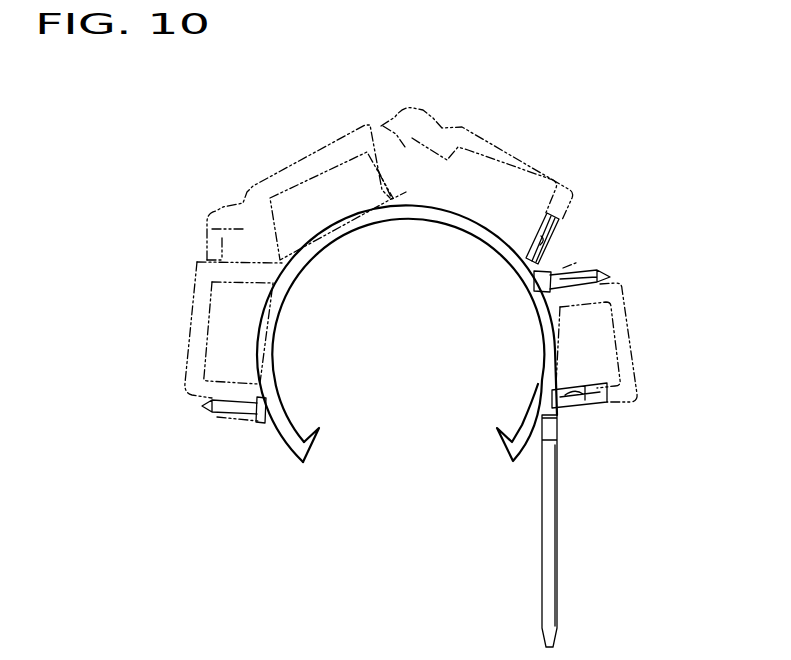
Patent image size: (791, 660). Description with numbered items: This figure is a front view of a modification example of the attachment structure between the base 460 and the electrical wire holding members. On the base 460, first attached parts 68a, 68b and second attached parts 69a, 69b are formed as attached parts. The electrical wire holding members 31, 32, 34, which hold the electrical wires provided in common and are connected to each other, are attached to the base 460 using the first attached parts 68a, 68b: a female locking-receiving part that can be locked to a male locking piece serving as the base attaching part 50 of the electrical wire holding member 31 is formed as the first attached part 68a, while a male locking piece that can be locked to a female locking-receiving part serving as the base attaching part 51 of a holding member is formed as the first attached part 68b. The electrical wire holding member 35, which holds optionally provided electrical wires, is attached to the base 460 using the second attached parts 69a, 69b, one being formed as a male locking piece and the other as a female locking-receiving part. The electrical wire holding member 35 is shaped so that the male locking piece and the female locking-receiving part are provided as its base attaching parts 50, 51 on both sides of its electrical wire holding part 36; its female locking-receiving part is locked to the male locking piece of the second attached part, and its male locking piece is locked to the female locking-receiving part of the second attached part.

The base 460 is at (407, 216).
The electrical wire holding member 31 is at (190, 309).
The electrical wire holding member 32 is at (305, 148).
The electrical wire holding member 34 is at (505, 148).
The electrical wire holding member 35 is at (636, 327).
The electrical wire holding part 36 is at (628, 365).
The first attached part 68a is at (204, 415).
The first attached part 68b is at (533, 255).
The second attached part 69a is at (603, 271).
The second attached part 69b is at (585, 408).
The base attaching part 50 is at (240, 420).
The base attaching part 51 is at (560, 235).